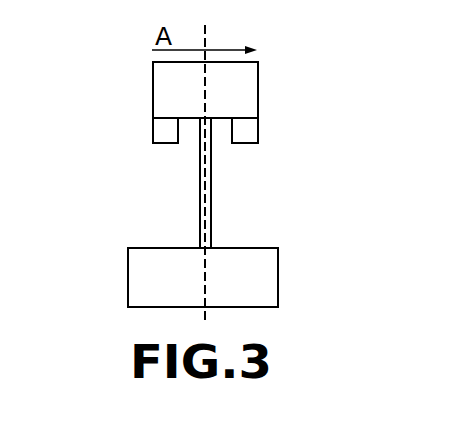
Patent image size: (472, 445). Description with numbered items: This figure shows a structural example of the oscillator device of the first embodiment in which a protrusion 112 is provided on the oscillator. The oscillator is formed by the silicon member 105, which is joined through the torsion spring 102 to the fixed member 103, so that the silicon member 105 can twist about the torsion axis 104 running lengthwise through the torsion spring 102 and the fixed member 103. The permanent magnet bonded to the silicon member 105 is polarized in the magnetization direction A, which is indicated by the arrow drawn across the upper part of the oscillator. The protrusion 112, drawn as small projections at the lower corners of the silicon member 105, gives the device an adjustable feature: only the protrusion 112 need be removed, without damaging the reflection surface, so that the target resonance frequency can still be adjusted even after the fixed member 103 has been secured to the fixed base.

The torsion spring 102 is at (211, 198).
The fixed member 103 is at (250, 263).
The torsion axis 104 is at (207, 42).
The silicon member 105 is at (250, 87).
The protrusion 112 is at (248, 132).